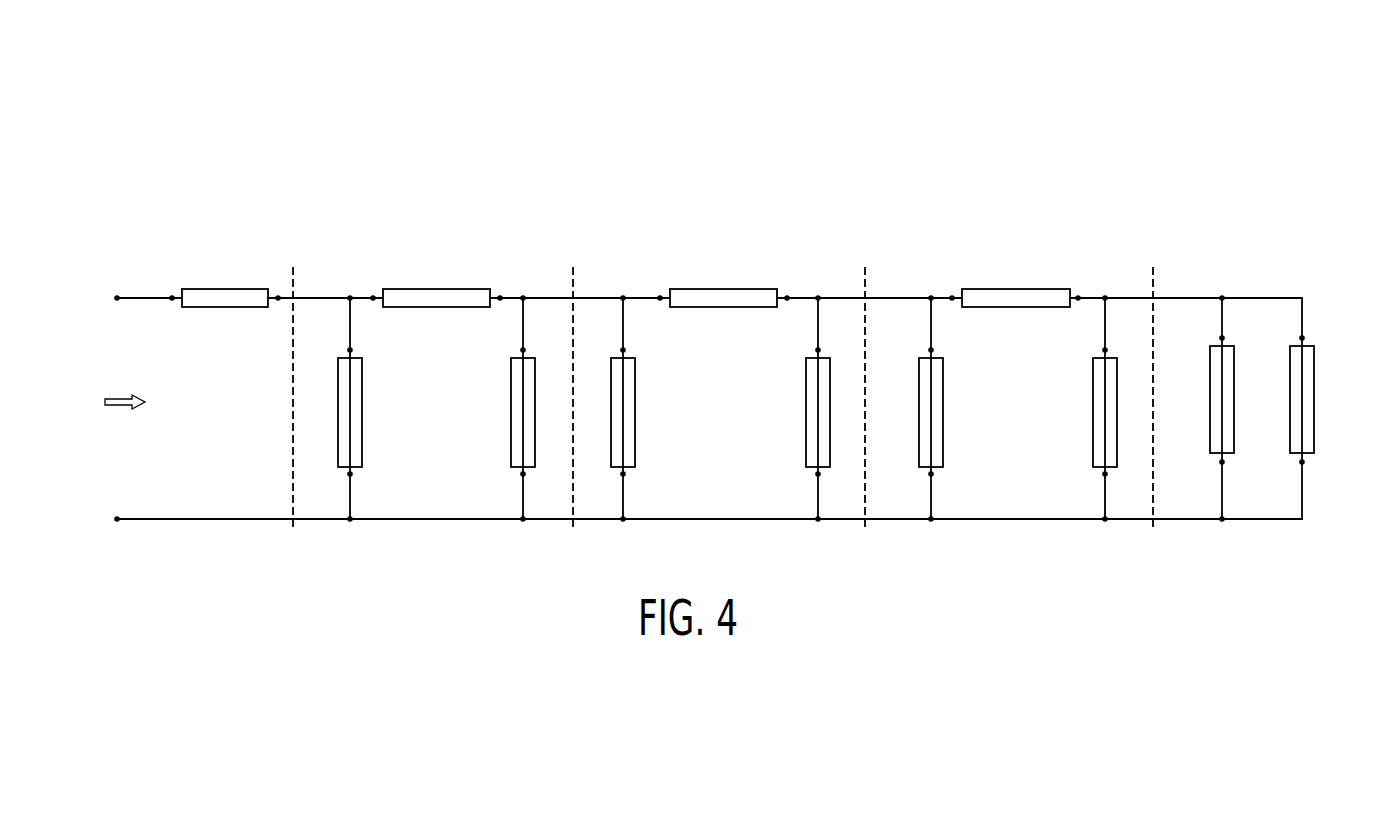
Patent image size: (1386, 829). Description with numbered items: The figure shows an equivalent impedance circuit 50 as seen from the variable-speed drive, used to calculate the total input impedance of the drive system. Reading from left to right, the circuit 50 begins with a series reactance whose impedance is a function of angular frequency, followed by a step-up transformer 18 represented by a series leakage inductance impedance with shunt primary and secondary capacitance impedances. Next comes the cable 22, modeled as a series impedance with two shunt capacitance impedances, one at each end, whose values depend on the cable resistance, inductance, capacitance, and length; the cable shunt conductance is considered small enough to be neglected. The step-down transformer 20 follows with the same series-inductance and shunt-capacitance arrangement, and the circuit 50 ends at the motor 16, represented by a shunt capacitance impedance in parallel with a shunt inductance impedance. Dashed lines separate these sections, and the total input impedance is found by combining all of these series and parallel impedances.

The equivalent impedance circuit 50 is at (1055, 82).
The step-up transformer 18 is at (443, 197).
The cable 22 is at (718, 237).
The step-down transformer 20 is at (1032, 207).
The motor 16 is at (1243, 232).